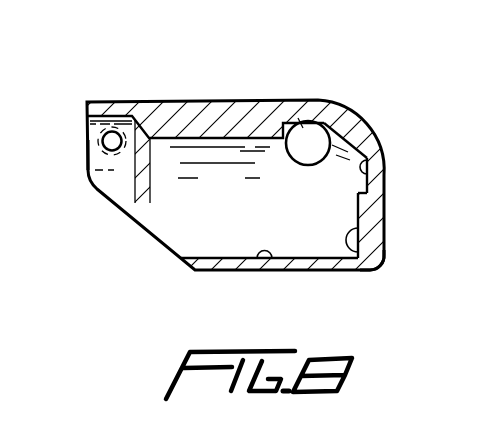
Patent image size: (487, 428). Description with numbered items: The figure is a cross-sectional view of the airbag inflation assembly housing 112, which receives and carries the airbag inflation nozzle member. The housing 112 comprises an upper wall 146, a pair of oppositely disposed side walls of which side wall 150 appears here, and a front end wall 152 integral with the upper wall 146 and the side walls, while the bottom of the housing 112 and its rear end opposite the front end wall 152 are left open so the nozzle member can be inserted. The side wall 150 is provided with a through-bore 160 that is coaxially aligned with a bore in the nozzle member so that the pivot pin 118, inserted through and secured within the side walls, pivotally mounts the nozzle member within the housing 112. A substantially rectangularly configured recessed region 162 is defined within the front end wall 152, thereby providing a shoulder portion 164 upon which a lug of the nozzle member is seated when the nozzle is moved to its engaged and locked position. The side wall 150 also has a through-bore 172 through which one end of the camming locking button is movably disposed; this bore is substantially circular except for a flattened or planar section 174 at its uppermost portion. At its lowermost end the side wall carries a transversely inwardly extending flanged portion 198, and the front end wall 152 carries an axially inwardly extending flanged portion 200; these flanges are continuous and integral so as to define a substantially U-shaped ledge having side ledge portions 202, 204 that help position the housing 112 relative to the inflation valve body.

The airbag inflation assembly housing 112 is at (342, 114).
The pivot pin 118 is at (88, 158).
The upper wall 146 is at (207, 112).
The side wall 150 is at (237, 206).
The front end wall 152 is at (383, 174).
The through-bore 160 is at (123, 120).
The recessed region 162 is at (377, 137).
The shoulder portion 164 is at (357, 193).
The through-bore 172 is at (311, 140).
The flattened or planar section 174 is at (303, 128).
The flanged portion 198 is at (295, 268).
The flanged portion 200 is at (362, 268).
The side ledge portion 202 is at (383, 226).
The side ledge portion 204 is at (252, 266).